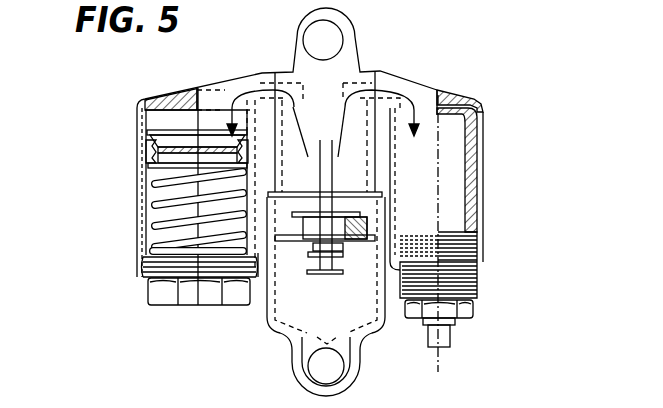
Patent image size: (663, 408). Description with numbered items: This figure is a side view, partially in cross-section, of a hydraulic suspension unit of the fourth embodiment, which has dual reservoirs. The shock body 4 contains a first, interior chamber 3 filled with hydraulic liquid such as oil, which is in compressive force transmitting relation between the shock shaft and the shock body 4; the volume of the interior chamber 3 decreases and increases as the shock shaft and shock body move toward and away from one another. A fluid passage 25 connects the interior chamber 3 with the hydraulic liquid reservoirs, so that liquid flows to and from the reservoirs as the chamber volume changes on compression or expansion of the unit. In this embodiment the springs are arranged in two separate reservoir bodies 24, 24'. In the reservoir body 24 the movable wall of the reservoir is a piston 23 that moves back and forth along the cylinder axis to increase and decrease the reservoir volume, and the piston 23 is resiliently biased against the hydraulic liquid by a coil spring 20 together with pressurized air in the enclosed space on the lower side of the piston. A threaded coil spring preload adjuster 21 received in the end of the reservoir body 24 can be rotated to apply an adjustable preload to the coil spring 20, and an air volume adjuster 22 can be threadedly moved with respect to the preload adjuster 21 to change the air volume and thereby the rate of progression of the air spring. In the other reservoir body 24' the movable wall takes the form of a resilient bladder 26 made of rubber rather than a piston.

The interior chamber 3 is at (310, 307).
The shock body 4 is at (287, 337).
The coil spring 20 is at (143, 202).
The coil spring preload adjuster 21 is at (148, 293).
The air volume adjuster 22 is at (474, 312).
The piston 23 is at (143, 160).
The reservoir body 24 is at (161, 103).
The reservoir body 24' is at (496, 87).
The fluid passage 25 is at (408, 82).
The resilient bladder 26 is at (480, 205).